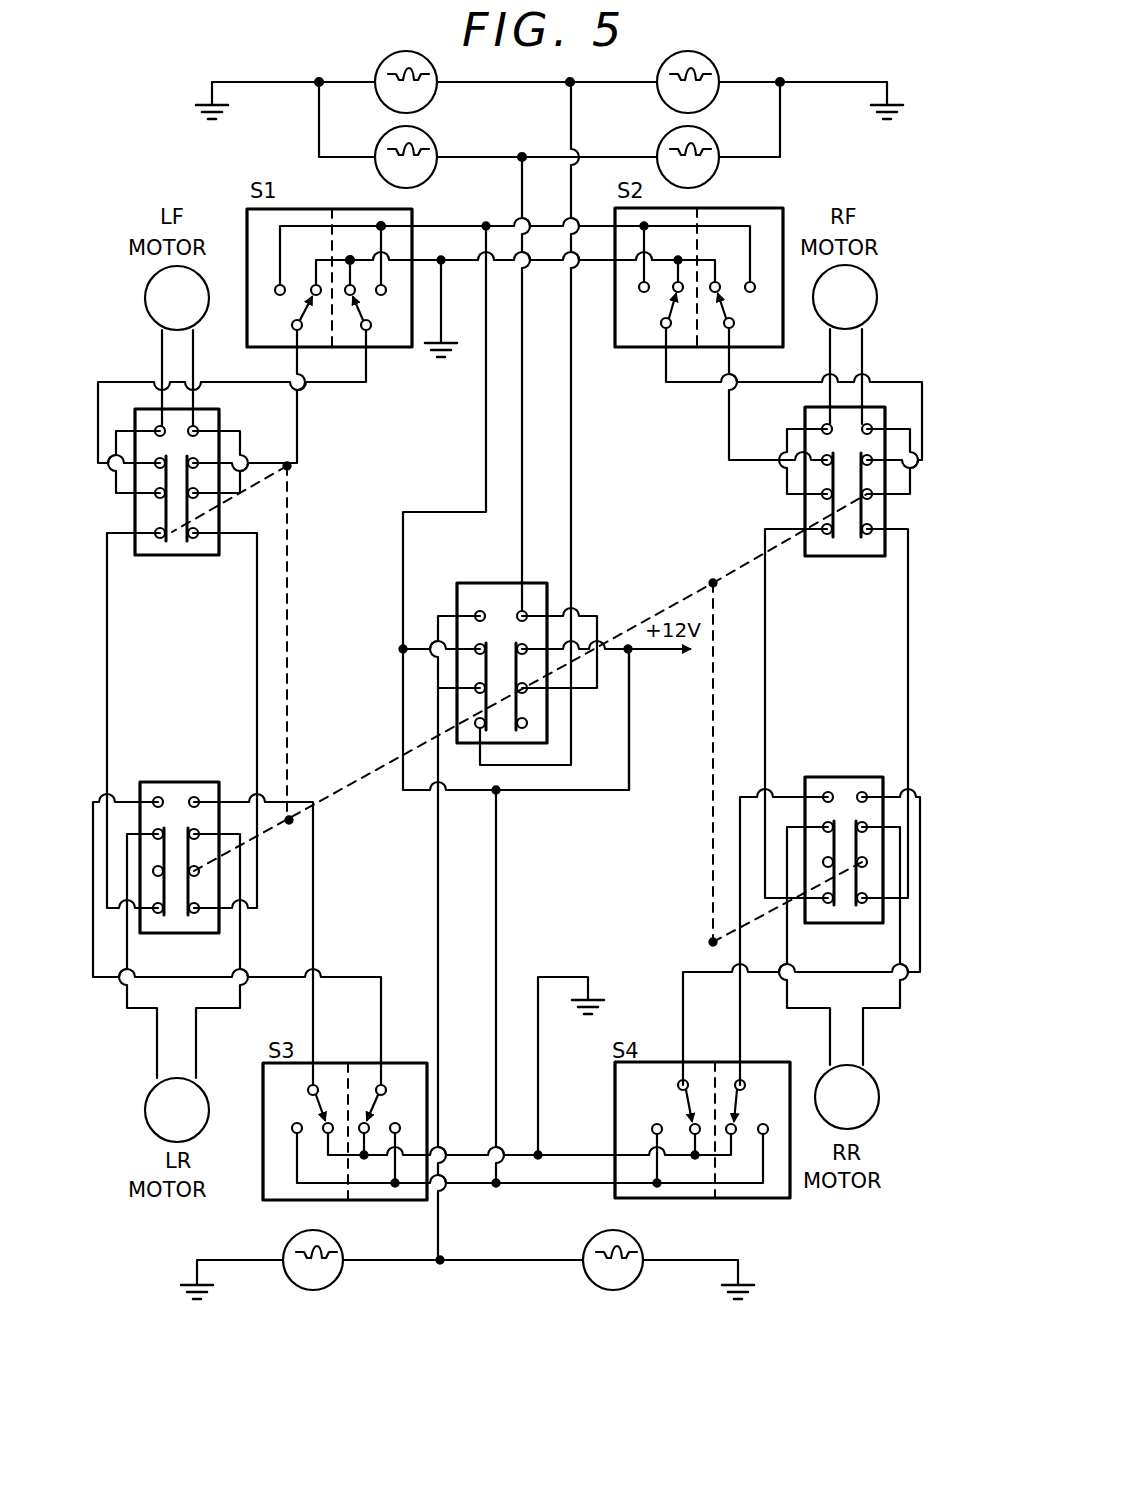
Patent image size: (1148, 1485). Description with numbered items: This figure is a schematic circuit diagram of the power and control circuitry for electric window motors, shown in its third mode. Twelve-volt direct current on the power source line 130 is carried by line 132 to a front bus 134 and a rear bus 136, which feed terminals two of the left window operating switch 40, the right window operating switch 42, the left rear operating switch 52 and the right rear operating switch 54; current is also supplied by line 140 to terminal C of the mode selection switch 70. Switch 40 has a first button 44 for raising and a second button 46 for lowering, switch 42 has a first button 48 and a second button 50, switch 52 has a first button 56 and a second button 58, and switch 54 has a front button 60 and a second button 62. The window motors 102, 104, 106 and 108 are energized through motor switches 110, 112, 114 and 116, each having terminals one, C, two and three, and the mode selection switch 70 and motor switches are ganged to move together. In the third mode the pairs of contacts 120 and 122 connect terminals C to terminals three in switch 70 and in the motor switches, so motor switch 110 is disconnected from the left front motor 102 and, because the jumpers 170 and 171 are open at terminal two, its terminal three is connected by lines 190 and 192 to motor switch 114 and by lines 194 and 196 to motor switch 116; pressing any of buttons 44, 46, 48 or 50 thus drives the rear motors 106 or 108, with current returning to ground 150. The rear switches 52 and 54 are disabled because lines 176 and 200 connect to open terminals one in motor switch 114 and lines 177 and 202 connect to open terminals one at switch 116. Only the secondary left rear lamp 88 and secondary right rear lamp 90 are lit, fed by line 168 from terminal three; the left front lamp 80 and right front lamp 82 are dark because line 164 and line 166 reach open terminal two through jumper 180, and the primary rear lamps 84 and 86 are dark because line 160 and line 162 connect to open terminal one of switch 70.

The left window operating switch 40 is at (389, 352).
The right window operating switch 42 is at (642, 350).
The first button 44 is at (297, 208).
The second button 46 is at (352, 208).
The first button 48 is at (736, 208).
The second button 50 is at (616, 220).
The left operating switch 52 is at (289, 1202).
The right operating switch 54 is at (786, 1200).
The first button 56 is at (265, 1115).
The second button 58 is at (405, 1070).
The front button 60 is at (612, 1092).
The second button 62 is at (766, 1068).
The mode selection switch 70 is at (487, 582).
The left front indicator lamp 80 is at (380, 146).
The right front indicator lamp 82 is at (720, 147).
The primary left rear window indicator lamp 84 is at (341, 1250).
The primary right rear window indicator lamp 86 is at (641, 1251).
The secondary left rear window indicator lamp 88 is at (378, 66).
The secondary right rear window indicator lamp 90 is at (717, 66).
The electric motor 102 is at (147, 292).
The electric motor 104 is at (872, 322).
The electric motor 106 is at (150, 1090).
The electric motor 108 is at (880, 1088).
The motor switch 110 is at (178, 560).
The motor switch 112 is at (845, 560).
The motor switch 114 is at (180, 780).
The motor switch 116 is at (833, 776).
The contact 120 is at (160, 560).
The contact 122 is at (200, 560).
The power source line 130 is at (647, 652).
The line 132 is at (485, 480).
The front bus 134 is at (444, 224).
The rear bus 136 is at (529, 1186).
The line 140 is at (613, 647).
The ground 150 is at (443, 360).
The line 160 is at (438, 895).
The line 162 is at (506, 1259).
The line 164 is at (523, 483).
The line 166 is at (534, 156).
The line 168 is at (573, 483).
The jumper 170 is at (240, 488).
The jumper 171 is at (116, 488).
The line 176 is at (318, 905).
The line 177 is at (712, 858).
The jumper 180 is at (595, 690).
The line 190 is at (108, 720).
The line 192 is at (257, 702).
The line 194 is at (766, 752).
The line 196 is at (907, 642).
The line 200 is at (356, 976).
The line 202 is at (700, 974).